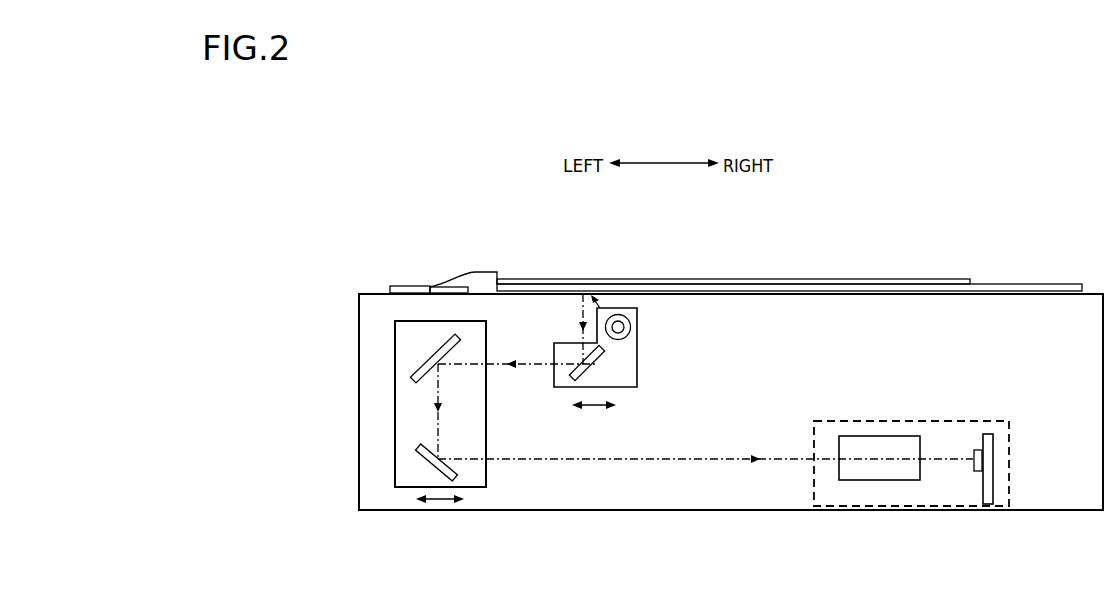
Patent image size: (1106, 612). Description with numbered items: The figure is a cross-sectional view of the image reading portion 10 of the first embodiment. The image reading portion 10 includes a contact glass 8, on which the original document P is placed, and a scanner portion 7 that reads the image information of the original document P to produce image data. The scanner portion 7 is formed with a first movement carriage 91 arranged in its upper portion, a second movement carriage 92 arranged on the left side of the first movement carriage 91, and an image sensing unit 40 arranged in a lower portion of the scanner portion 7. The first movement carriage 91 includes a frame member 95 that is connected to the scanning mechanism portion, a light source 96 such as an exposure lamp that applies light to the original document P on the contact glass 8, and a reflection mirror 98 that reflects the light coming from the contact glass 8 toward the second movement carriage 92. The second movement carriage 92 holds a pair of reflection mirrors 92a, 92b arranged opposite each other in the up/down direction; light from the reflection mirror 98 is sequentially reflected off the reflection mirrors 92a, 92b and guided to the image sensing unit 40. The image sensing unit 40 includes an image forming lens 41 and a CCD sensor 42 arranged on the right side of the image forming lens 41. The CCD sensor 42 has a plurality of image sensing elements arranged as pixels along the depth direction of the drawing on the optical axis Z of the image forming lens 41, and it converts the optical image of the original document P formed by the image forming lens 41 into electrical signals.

The scanner portion 7 is at (672, 518).
The contact glass 8 is at (1036, 284).
The original document P is at (857, 279).
The image reading portion 10 is at (935, 231).
The image sensing unit 40 is at (931, 490).
The image forming lens 41 is at (873, 481).
The CCD sensor 42 is at (975, 467).
The optical axis Z is at (945, 461).
The first movement carriage 91 is at (632, 321).
The second movement carriage 92 is at (408, 441).
The reflection mirror 92a is at (418, 366).
The reflection mirror 92b is at (425, 462).
The frame member 95 is at (630, 321).
The light source 96 is at (621, 314).
The reflection mirror 98 is at (603, 352).